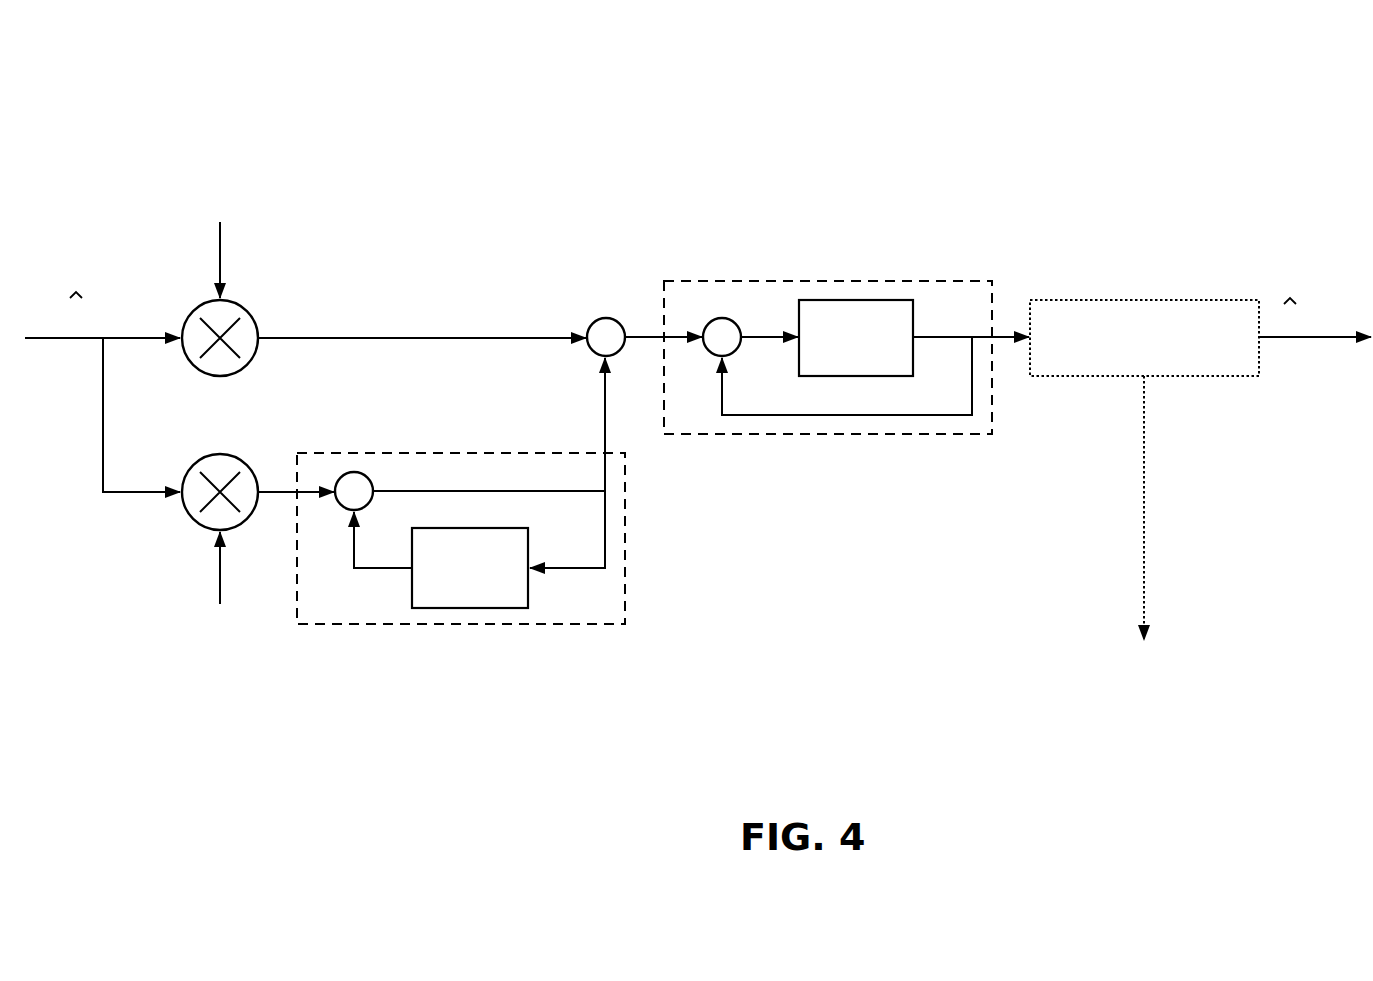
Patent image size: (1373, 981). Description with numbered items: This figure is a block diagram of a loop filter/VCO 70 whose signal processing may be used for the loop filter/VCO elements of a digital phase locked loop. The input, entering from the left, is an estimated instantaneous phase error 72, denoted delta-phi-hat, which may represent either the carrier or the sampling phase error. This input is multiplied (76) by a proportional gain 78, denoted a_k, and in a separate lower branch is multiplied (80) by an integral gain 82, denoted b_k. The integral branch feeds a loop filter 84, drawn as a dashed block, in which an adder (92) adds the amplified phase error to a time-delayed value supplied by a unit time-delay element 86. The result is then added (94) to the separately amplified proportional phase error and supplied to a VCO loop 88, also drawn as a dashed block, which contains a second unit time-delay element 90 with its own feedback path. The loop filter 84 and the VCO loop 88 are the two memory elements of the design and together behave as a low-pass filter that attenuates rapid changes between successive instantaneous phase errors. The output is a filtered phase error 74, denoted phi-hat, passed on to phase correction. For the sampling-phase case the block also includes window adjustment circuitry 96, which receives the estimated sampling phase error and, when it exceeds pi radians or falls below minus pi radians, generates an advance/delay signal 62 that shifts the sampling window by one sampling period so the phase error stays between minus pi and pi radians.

The loop filter/VCO 70 is at (390, 203).
The estimated instantaneous phase error 72 is at (119, 335).
The phase error 74 is at (1297, 340).
The multiplication 76 is at (250, 360).
The proportional gain 78 is at (221, 256).
The multiplication 80 is at (192, 462).
The integral gain 82 is at (218, 570).
The loop filter 84 is at (470, 452).
The unit time-delay element 86 is at (472, 610).
The VCO loop 88 is at (778, 280).
The unit time-delay element 90 is at (892, 298).
The adder 92 is at (354, 470).
The adder 94 is at (607, 318).
The window adjustment circuitry 96 is at (1066, 378).
The advance/delay signal 62 is at (1146, 468).